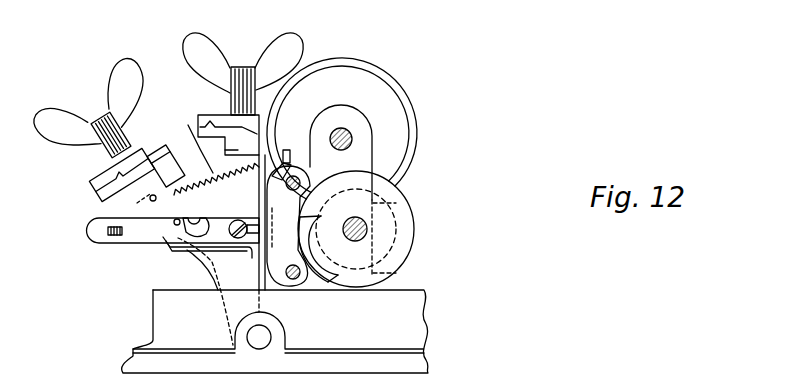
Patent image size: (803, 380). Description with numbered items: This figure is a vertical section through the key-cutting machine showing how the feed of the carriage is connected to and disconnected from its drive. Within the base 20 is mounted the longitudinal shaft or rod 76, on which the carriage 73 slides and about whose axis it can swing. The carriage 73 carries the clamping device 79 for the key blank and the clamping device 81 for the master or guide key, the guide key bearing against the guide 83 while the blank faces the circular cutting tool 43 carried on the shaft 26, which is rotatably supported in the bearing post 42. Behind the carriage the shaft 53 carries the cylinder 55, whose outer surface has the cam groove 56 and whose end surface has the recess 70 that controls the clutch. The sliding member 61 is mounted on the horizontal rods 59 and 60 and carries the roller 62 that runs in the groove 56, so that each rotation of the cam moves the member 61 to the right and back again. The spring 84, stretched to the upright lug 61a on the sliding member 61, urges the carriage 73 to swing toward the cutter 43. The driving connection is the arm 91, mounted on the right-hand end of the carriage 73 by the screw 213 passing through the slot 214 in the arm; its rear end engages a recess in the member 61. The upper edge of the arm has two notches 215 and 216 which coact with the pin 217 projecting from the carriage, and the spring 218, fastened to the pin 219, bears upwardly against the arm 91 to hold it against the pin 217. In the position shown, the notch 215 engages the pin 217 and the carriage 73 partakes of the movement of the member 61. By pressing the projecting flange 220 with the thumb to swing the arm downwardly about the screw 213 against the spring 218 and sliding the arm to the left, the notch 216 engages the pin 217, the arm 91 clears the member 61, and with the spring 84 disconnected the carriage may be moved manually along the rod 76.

The base 20 is at (422, 302).
The shaft 26 is at (352, 142).
The bearing post 42 is at (357, 122).
The circular cutting tool 43 is at (375, 88).
The shaft 53 is at (366, 233).
The cylinder 55 is at (413, 225).
The cam groove 56 is at (395, 205).
The horizontal rod 59 is at (300, 180).
The horizontal rod 60 is at (305, 289).
The sliding member 61 is at (292, 279).
The upright lug 61a is at (289, 150).
The roller 62 is at (263, 230).
The recess 70 is at (338, 279).
The carriage 73 is at (215, 144).
The longitudinal shaft or rod 76 is at (268, 337).
The clamping device 79 is at (212, 97).
The clamping device 81 is at (90, 172).
The guide 83 is at (167, 143).
The spring 84 is at (250, 173).
The arm 91 is at (130, 243).
The screw 213 is at (238, 220).
The slot 214 is at (283, 215).
The notch 215 is at (174, 221).
The notch 216 is at (178, 249).
The pin 217 is at (176, 226).
The spring 218 is at (193, 252).
The pin 219 is at (233, 250).
The projecting flange 220 is at (107, 231).